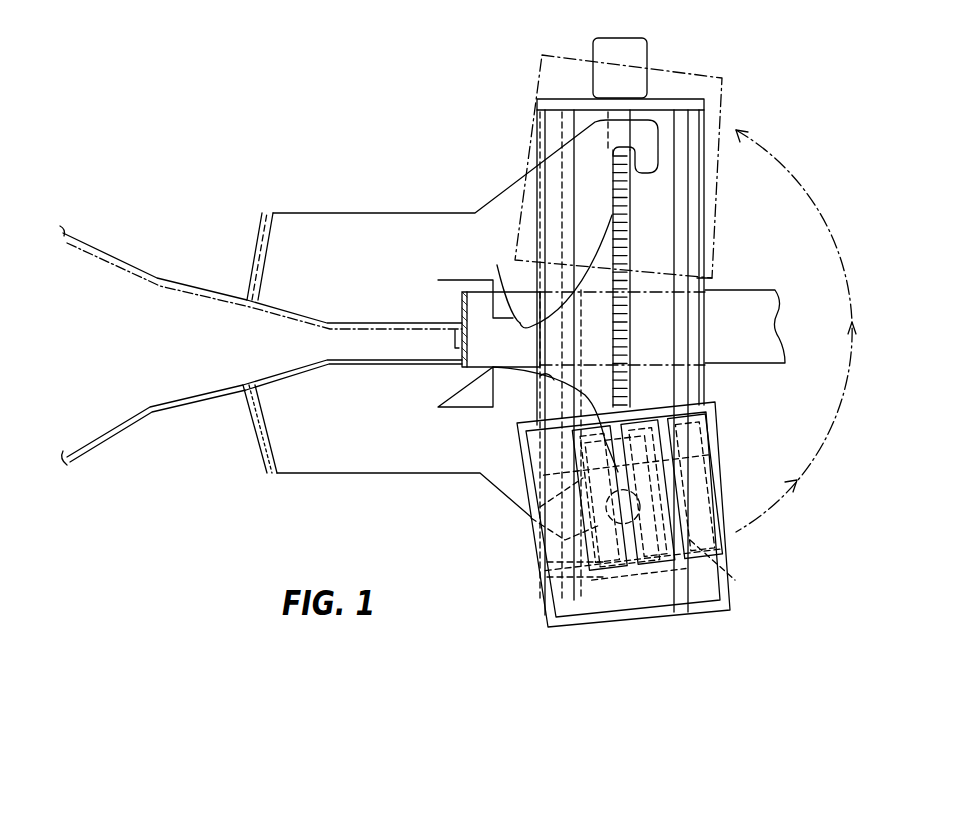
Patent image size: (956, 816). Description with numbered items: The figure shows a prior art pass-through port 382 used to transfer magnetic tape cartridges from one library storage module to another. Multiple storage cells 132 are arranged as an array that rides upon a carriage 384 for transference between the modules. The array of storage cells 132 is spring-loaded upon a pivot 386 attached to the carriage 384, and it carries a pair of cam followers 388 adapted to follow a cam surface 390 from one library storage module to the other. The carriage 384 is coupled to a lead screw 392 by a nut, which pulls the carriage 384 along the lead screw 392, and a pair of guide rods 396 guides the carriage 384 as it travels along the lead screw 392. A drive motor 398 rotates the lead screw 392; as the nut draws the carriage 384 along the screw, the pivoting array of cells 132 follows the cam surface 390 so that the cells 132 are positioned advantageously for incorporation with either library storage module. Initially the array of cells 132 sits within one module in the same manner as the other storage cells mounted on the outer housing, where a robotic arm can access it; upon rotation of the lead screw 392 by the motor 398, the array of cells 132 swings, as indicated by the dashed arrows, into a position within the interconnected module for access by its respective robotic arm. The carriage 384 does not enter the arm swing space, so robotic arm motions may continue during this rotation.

The actuator assembly 382 is at (490, 102).
The drive motor 398 is at (637, 52).
The guide rods 396 is at (680, 138).
The lead screw 392 is at (633, 315).
The cam surface 390 is at (507, 281).
The carriage 384 is at (575, 455).
The storage cells 132 is at (570, 614).
The cam followers 388 is at (531, 518).
The pivot 386 is at (533, 555).